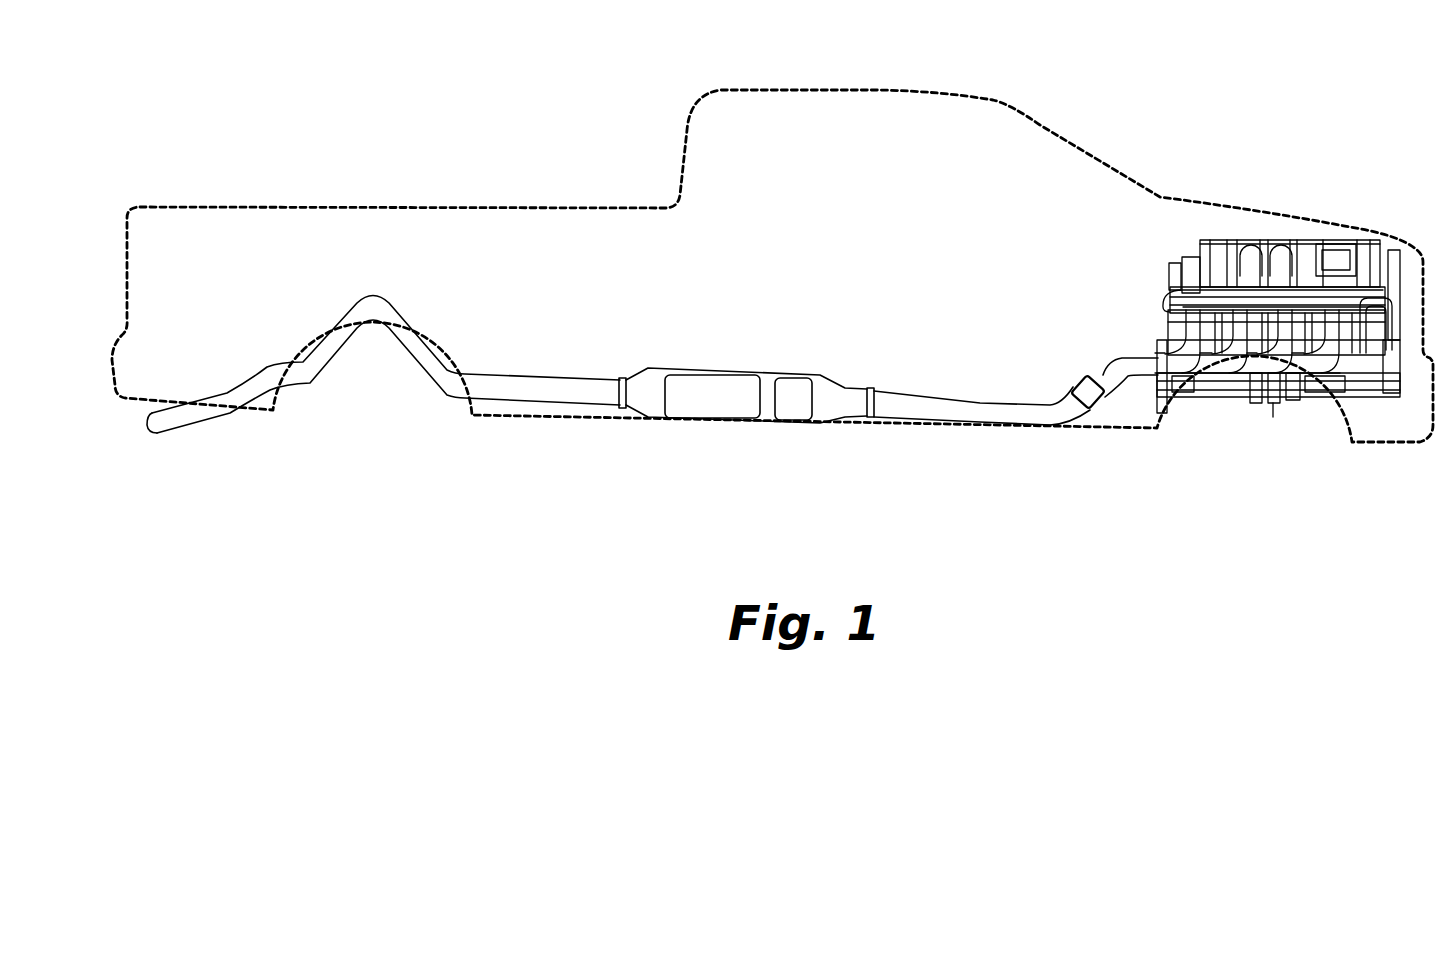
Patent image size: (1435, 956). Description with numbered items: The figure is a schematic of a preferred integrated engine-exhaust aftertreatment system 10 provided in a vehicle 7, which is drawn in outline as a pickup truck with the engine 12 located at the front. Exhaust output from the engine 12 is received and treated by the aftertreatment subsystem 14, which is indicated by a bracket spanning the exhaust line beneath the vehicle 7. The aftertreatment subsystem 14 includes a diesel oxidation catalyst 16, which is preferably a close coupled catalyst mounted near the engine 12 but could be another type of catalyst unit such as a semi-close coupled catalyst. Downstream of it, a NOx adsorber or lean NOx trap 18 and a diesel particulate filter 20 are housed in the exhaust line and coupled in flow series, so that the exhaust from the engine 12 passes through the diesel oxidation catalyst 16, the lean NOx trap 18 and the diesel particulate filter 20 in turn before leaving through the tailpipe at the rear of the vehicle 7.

The vehicle 7 is at (835, 88).
The integrated engine-exhaust aftertreatment system 10 is at (1197, 73).
The engine 12 is at (1278, 258).
The aftertreatment subsystem 14 is at (1434, 556).
The diesel oxidation catalyst 16 is at (1078, 373).
The lean NOx trap 18 is at (790, 387).
The diesel particulate filter 20 is at (677, 380).